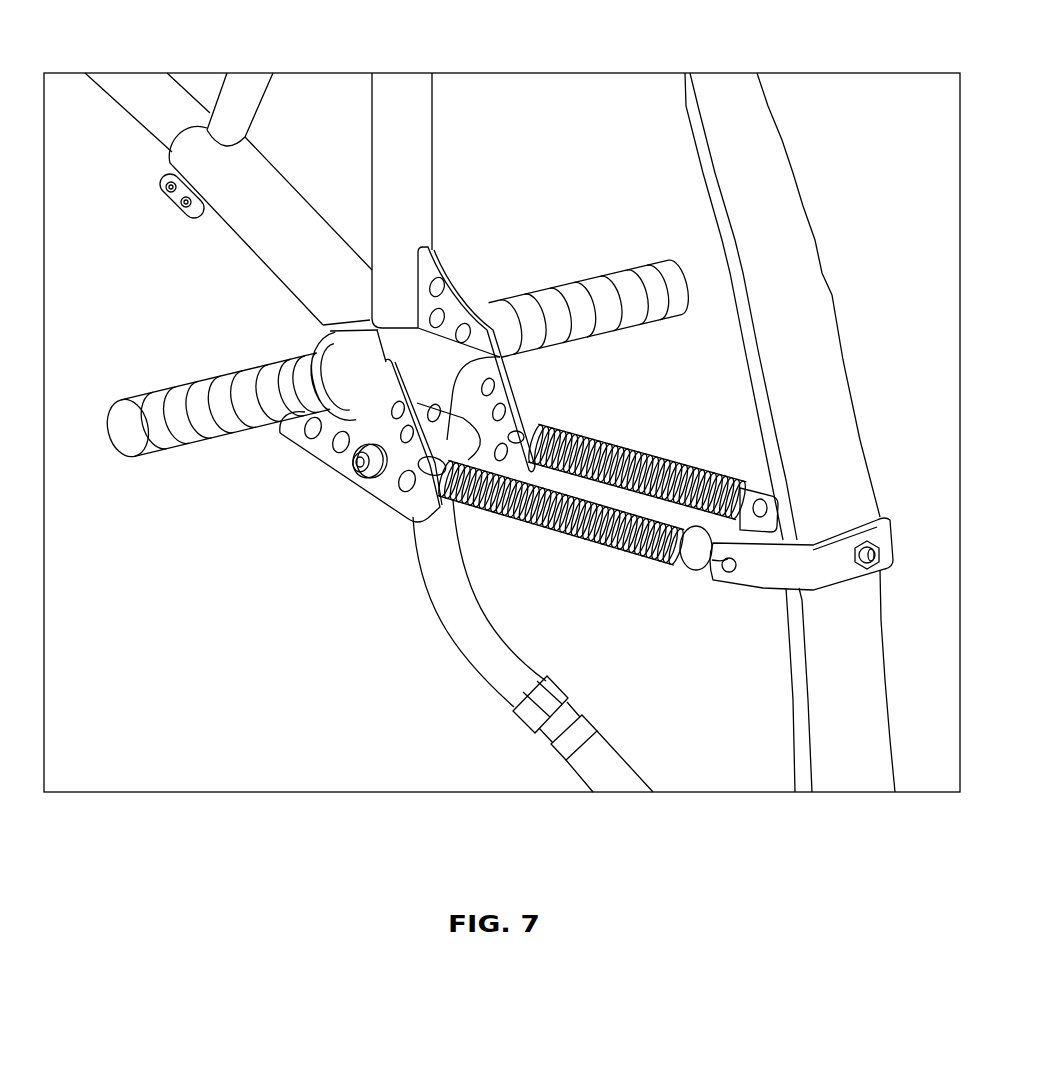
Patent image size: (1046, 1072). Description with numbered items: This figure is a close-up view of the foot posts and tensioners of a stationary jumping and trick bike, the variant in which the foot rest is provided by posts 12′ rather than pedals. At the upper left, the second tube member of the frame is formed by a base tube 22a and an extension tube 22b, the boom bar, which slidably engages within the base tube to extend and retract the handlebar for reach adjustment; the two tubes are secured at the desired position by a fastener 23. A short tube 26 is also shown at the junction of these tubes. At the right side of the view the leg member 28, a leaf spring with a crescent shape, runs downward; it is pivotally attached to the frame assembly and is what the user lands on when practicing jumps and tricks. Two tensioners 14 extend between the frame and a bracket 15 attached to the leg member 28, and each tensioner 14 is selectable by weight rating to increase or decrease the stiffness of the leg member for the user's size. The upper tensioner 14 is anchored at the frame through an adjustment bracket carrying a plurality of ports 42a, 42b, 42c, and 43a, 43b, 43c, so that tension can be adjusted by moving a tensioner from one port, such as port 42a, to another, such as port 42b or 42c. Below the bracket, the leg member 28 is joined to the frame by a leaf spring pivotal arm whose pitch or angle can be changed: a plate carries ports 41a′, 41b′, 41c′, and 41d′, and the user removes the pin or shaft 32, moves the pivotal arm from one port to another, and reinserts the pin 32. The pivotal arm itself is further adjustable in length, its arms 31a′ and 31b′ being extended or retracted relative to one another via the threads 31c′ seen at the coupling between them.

The posts 12′ is at (127, 437).
The tensioner 14 is at (701, 458).
The bracket 15 is at (760, 592).
The base tube 22a is at (268, 270).
The extension tube 22b is at (132, 124).
The fastener 23 is at (175, 200).
The tube 26 is at (253, 122).
The leg member 28 is at (856, 383).
The arm 31a′ is at (640, 767).
The arm 31b′ is at (508, 637).
The threads 31c′ is at (578, 709).
The pin or shaft 32 is at (360, 472).
The port 41a′ is at (302, 440).
The port 41b′ is at (330, 453).
The port 41c′ is at (380, 490).
The port 41d′ is at (400, 497).
The port 42a is at (385, 395).
The port 42b is at (396, 434).
The port 42c is at (422, 447).
The port 43a is at (468, 307).
The port 43b is at (447, 313).
The port 43c is at (447, 263).